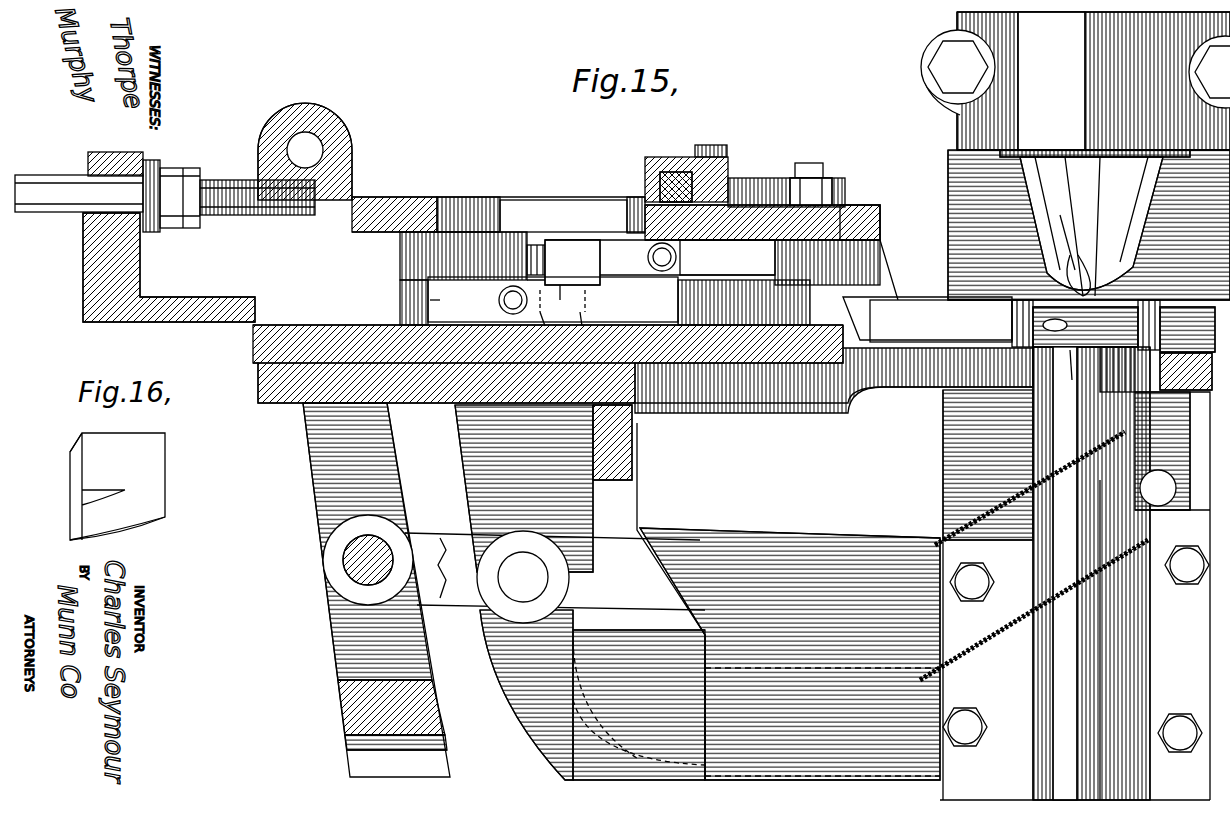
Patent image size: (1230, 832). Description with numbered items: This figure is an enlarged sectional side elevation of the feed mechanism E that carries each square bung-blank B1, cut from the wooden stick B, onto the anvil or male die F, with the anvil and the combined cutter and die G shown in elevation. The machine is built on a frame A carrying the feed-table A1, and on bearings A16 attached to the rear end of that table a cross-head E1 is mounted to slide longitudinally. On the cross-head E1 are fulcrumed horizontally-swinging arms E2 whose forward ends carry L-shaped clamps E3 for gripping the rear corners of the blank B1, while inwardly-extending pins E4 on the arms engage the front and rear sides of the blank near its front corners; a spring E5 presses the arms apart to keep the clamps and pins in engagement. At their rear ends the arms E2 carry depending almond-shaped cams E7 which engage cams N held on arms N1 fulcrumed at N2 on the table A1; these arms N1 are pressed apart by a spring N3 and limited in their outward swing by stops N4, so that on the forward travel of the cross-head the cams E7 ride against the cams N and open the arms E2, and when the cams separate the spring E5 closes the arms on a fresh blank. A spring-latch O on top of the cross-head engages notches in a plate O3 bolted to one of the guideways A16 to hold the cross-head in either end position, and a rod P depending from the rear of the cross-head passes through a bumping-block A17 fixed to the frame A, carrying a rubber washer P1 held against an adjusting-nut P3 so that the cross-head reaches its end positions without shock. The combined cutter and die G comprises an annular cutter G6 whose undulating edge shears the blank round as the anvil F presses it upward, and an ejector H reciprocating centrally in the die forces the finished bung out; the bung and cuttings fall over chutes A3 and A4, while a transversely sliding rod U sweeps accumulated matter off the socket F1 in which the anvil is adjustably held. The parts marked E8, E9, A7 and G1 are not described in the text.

In FIG. 15, the rod P is at (38, 214).
In FIG. 15, the bumping-block A17 is at (128, 150).
In FIG. 15, the washer P1 is at (153, 160).
In FIG. 15, the adjusting-nut P3 is at (190, 168).
In FIG. 15, the feed mechanism E is at (625, 234).
In FIG. 15, the bearings A16 is at (468, 175).
In FIG. 15, the spring-latch O is at (672, 160).
In FIG. 15, the plate O3 is at (765, 160).
In FIG. 15, the cross-head E1 is at (870, 205).
In FIG. 15, the almond-shaped cam E7 is at (590, 280).
In FIG. 16, the almond-shaped cam E7 is at (75, 512).
In FIG. 15, the spring E5 is at (645, 258).
In FIG. 15, the horizontally-swinging arms E2 is at (920, 300).
In FIG. 15, the cam N is at (640, 288).
In FIG. 15, the spring N3 is at (497, 298).
In FIG. 15, the fulcrum N2 is at (442, 301).
In FIG. 15, the arms N1 is at (528, 335).
In FIG. 15, the stops N4 is at (567, 335).
In FIG. 15, the feed-table A1 is at (252, 337).
In FIG. 15, the frame A is at (520, 728).
In FIG. 15, the lever E8 is at (318, 478).
In FIG. 15, the link rod E9 is at (442, 552).
In FIG. 15, the chute A4 is at (806, 542).
In FIG. 15, the frame top part A7 is at (965, 128).
In FIG. 15, the combined cutter and die G is at (1068, 165).
In FIG. 15, the hopper plate G1 is at (1058, 150).
In FIG. 15, the annular cutter G6 is at (1064, 233).
In FIG. 15, the ejector H is at (1075, 264).
In FIG. 15, the pins E4 is at (1030, 327).
In FIG. 15, the L-shaped clamps E3 is at (1175, 292).
In FIG. 15, the anvil or male die F is at (1091, 573).
In FIG. 15, the socket F1 is at (1105, 665).
In FIG. 15, the wooden stick or strip B is at (1195, 390).
In FIG. 15, the square bung-blank B1 is at (1075, 350).
In FIG. 15, the rod U is at (1158, 488).
In FIG. 15, the chute A3 is at (973, 655).